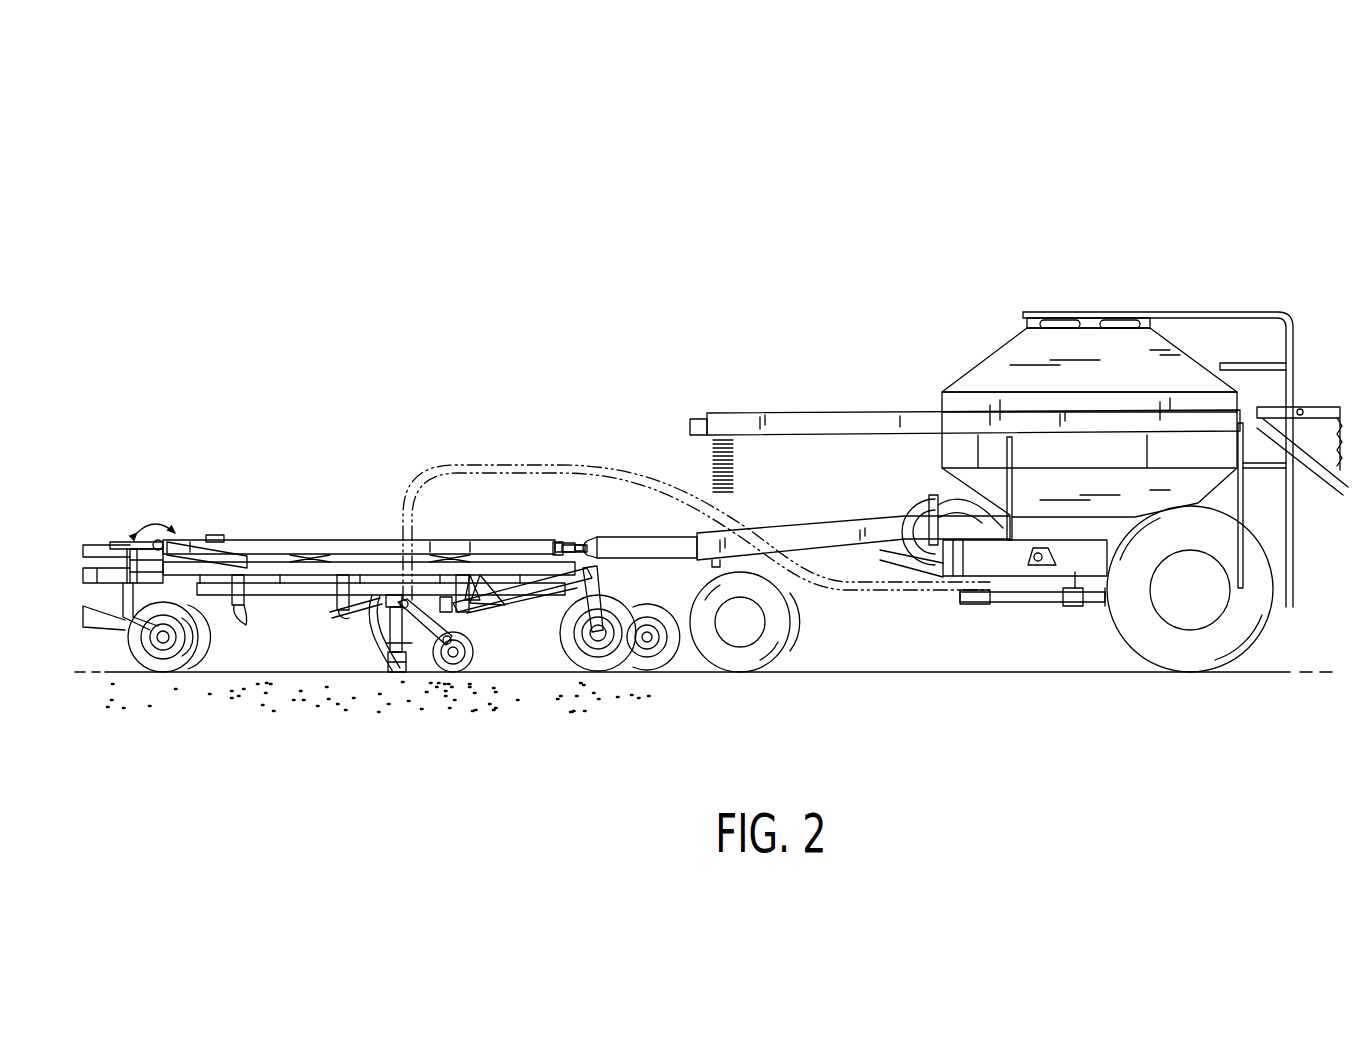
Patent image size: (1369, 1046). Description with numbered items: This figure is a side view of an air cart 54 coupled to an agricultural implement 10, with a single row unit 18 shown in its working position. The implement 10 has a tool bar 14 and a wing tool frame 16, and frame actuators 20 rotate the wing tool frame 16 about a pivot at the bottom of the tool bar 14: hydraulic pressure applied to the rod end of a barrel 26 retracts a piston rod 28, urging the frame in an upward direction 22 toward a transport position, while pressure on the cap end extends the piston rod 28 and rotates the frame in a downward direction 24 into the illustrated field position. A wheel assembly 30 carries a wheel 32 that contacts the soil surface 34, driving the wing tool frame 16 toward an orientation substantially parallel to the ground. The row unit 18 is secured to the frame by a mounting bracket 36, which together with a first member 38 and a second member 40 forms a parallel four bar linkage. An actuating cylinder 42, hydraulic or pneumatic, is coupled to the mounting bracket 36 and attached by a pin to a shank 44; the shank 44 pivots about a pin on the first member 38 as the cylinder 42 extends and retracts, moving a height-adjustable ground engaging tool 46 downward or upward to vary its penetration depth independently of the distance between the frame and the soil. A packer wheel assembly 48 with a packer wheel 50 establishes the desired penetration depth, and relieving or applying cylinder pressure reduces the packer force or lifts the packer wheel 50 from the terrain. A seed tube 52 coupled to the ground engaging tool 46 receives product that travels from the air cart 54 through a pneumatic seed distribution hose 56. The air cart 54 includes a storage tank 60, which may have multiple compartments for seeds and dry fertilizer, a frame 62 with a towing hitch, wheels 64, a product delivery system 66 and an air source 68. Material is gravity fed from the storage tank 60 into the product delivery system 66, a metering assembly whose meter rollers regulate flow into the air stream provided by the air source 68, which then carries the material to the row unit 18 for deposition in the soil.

The implement 10 is at (336, 492).
The tool bar 14 is at (137, 570).
The wing tool frame 16 is at (388, 565).
The row unit 18 is at (380, 667).
The frame actuator 20 is at (210, 536).
The upward direction 22 is at (156, 527).
The downward direction 24 is at (160, 525).
The barrel 26 is at (236, 550).
The piston rod 28 is at (286, 553).
The wheel assembly 30 is at (514, 551).
The wheel 32 is at (607, 598).
The soil surface 34 is at (498, 673).
The mounting bracket 36 is at (242, 612).
The first member 38 is at (372, 615).
The second member 40 is at (369, 596).
The actuating cylinder 42 is at (348, 615).
The shank 44 is at (413, 658).
The ground engaging tool 46 is at (387, 677).
The packer wheel assembly 48 is at (462, 612).
The packer wheel 50 is at (474, 652).
The seed tube 52 is at (410, 677).
The air cart 54 is at (994, 291).
The pneumatic seed distribution hose 56 is at (425, 585).
The storage tank 60 is at (1010, 353).
The frame 62 is at (810, 527).
The wheels 64 is at (813, 630).
The product delivery system 66 is at (1050, 568).
The air source 68 is at (892, 507).